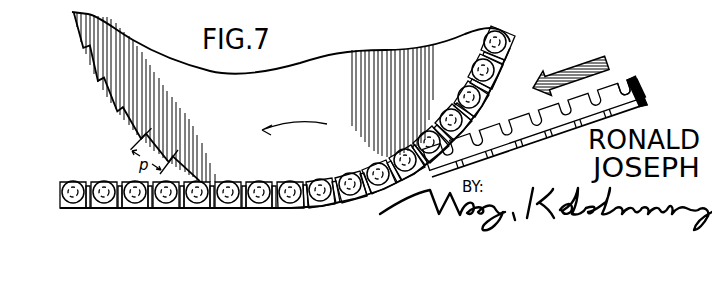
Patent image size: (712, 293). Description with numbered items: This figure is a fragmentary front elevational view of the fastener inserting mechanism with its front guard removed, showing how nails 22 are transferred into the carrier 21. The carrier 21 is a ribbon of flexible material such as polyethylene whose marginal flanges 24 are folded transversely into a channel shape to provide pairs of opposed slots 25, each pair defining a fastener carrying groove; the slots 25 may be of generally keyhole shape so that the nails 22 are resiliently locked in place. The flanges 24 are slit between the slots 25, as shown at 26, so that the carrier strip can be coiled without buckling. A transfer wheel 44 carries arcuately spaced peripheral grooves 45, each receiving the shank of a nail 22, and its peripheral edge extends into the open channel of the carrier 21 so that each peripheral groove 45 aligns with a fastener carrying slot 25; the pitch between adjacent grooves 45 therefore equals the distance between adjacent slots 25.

The carrier 21 is at (641, 104).
The nails 22 is at (136, 181).
The flanges 24 is at (641, 92).
The slots 25 is at (619, 83).
The slit 26 is at (633, 78).
The transfer wheel 44 is at (330, 105).
The peripheral grooves 45 is at (119, 111).